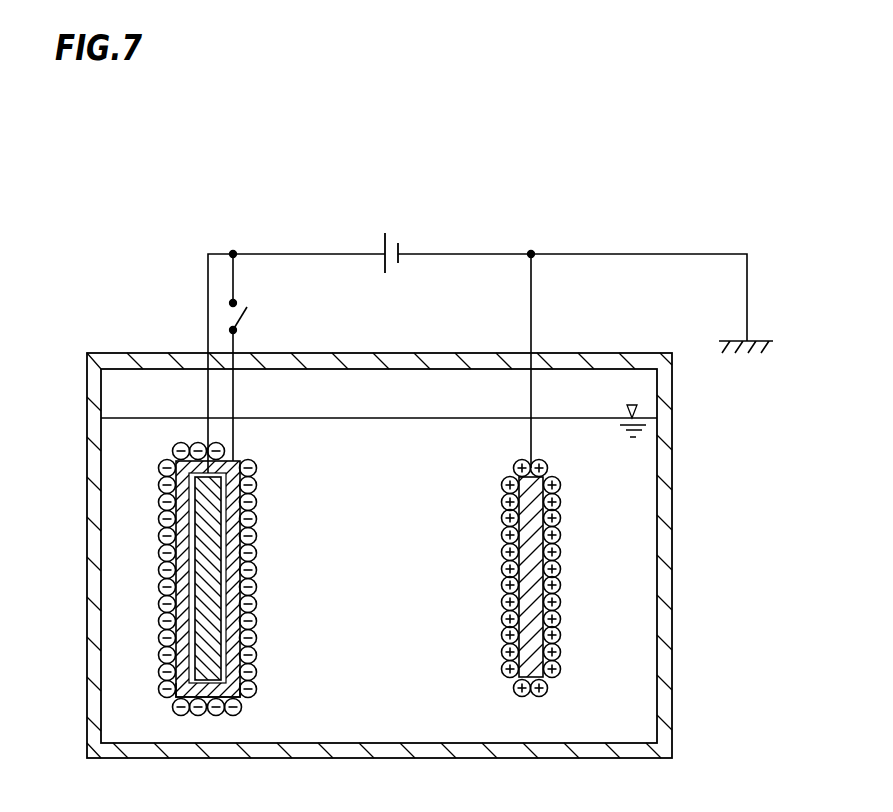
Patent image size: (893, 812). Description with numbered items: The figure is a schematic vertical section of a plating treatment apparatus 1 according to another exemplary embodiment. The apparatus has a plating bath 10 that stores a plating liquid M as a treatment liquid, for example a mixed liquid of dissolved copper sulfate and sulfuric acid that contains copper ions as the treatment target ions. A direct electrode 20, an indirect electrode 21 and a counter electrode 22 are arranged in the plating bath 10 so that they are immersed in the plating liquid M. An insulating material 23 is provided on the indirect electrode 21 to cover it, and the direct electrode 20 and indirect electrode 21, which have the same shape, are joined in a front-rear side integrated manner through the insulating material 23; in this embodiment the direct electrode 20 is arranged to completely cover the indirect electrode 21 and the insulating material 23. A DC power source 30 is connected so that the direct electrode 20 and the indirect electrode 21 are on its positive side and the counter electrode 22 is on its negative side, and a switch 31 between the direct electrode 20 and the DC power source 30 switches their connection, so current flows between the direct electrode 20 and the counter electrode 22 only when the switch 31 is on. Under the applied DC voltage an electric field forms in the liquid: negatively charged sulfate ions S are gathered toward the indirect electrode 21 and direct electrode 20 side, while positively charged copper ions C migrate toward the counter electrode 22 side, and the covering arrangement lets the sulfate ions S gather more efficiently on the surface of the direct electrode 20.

The plating treatment apparatus 1 is at (340, 213).
The plating bath 10 is at (667, 560).
The plating liquid M is at (645, 467).
The direct electrode 20 is at (243, 563).
The indirect electrode 21 is at (190, 565).
The counter electrode 22 is at (540, 567).
The insulating material 23 is at (177, 697).
The DC power source 30 is at (398, 246).
The switch 31 is at (245, 310).
The sulfate ions S is at (240, 708).
The copper ions C is at (519, 668).